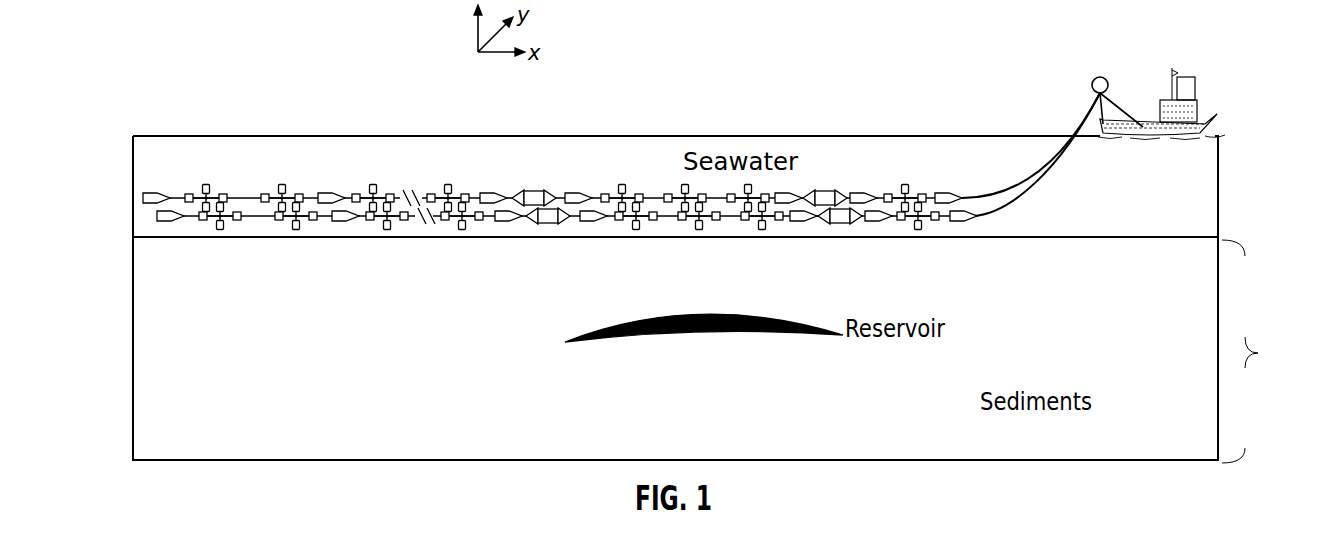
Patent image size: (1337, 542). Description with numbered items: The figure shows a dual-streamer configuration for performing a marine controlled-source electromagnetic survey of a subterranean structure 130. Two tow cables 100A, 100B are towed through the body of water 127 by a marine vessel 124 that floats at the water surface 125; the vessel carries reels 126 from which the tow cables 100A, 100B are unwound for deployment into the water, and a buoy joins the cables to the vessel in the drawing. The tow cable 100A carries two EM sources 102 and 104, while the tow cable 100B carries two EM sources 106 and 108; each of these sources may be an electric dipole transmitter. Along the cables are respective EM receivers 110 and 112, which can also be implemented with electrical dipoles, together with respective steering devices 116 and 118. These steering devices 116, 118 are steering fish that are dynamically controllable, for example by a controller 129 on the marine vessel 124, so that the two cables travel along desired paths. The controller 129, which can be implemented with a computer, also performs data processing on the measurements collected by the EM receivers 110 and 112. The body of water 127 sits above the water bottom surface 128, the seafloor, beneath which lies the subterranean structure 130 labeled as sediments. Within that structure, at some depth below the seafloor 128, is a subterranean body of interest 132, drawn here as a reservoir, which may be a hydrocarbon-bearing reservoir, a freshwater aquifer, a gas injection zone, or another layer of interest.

The tow cable 100A is at (635, 136).
The tow cable 100B is at (643, 164).
The EM source 102 is at (855, 140).
The EM source 104 is at (567, 151).
The EM source 106 is at (862, 256).
The EM source 108 is at (576, 255).
The EM receivers 110 is at (282, 185).
The EM receivers 112 is at (297, 230).
The steering devices 116 is at (568, 151).
The steering devices 118 is at (612, 268).
The marine vessel 124 is at (1189, 104).
The water surface 125 is at (616, 82).
The reels 126 is at (1086, 78).
The body of water 127 is at (1164, 188).
The water bottom surface 128 is at (718, 215).
The controller 129 is at (1218, 78).
The subterranean structure 130 is at (1259, 351).
The subterranean body of interest 132 is at (704, 345).